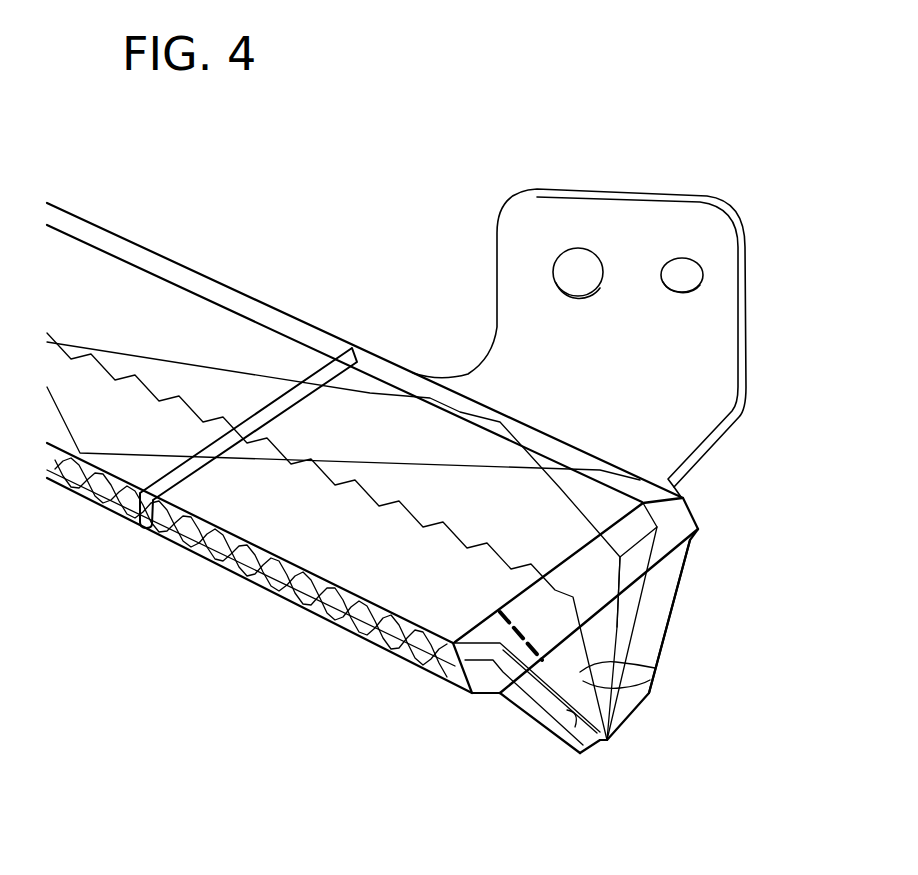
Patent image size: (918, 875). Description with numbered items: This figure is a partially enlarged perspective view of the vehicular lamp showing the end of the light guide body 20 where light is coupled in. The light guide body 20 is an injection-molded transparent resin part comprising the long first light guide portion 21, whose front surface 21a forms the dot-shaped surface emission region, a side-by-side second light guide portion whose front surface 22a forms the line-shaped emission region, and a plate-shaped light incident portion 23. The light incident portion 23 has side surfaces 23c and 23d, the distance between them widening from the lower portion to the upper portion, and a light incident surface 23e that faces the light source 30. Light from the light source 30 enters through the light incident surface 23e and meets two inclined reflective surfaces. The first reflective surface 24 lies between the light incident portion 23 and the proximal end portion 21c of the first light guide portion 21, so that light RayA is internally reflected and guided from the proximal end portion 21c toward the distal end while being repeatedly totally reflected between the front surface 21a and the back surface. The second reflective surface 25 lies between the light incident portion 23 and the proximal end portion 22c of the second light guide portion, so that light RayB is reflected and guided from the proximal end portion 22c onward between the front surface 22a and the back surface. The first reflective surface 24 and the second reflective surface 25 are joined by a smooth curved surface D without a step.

The light guide body 20 is at (87, 205).
The front surface 21a is at (122, 283).
The first light guide portion 21 is at (217, 323).
The proximal end portion 21c is at (590, 494).
The front surface 22a is at (93, 490).
The proximal end portion 22c is at (433, 676).
The light incident portion 23 is at (657, 597).
The side surface 23c is at (511, 708).
The side surface 23d is at (668, 623).
The light incident surface 23e is at (606, 742).
The first reflective surface 24 is at (587, 563).
The second reflective surface 25 is at (486, 636).
The smooth curved surface D is at (506, 610).
The light source 30 is at (607, 742).
The light RayA is at (653, 664).
The light RayB is at (556, 728).